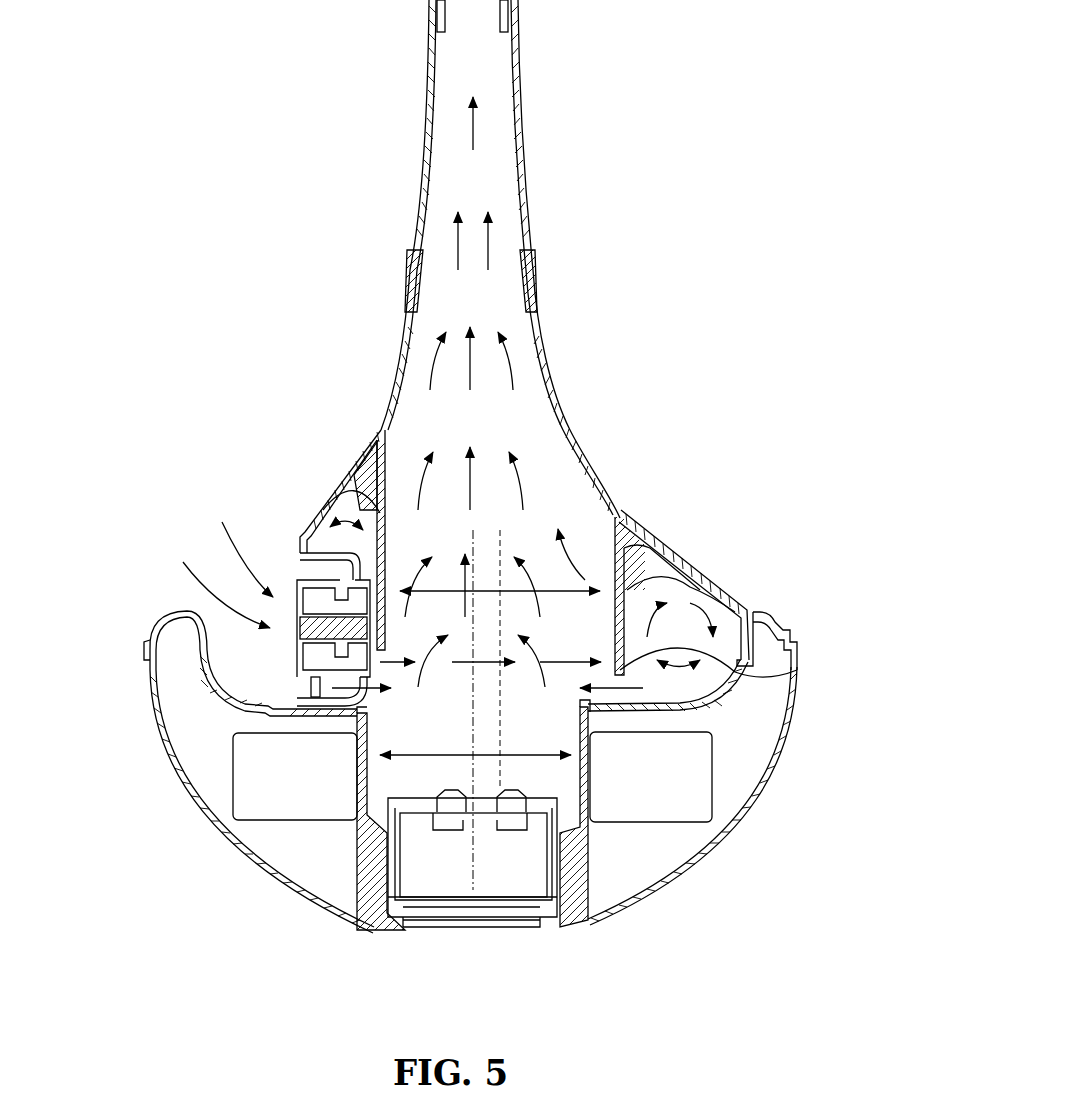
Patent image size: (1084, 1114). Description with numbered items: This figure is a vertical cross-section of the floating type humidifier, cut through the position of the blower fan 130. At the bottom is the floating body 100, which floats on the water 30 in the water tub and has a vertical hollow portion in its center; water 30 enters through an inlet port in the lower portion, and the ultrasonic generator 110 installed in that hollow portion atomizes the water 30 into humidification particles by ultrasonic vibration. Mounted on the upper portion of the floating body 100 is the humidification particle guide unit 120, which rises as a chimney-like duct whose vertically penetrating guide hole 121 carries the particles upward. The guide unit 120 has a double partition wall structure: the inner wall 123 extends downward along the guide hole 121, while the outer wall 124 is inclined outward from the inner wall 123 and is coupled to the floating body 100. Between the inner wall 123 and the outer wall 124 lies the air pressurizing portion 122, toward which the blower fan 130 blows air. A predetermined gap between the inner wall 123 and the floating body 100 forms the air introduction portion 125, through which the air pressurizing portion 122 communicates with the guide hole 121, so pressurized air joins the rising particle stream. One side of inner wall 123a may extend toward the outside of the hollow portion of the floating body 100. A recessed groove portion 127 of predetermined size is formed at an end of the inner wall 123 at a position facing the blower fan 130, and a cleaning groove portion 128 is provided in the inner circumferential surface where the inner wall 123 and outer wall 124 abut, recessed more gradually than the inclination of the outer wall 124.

The floating body 100 is at (778, 733).
The ultrasonic generator 110 is at (500, 863).
The humidification particle guide unit 120 is at (520, 143).
The guide hole 121 is at (477, 300).
The air pressurizing portion 122 is at (367, 487).
The inner wall 123 is at (380, 513).
The one side of inner wall 123a is at (705, 662).
The outer wall 124 is at (352, 495).
The air introduction portion 125 is at (372, 700).
The recessed groove portion 127 is at (423, 780).
The cleaning groove portion 128 is at (640, 560).
The blower fan 130 is at (327, 635).
The water 30 is at (393, 778).